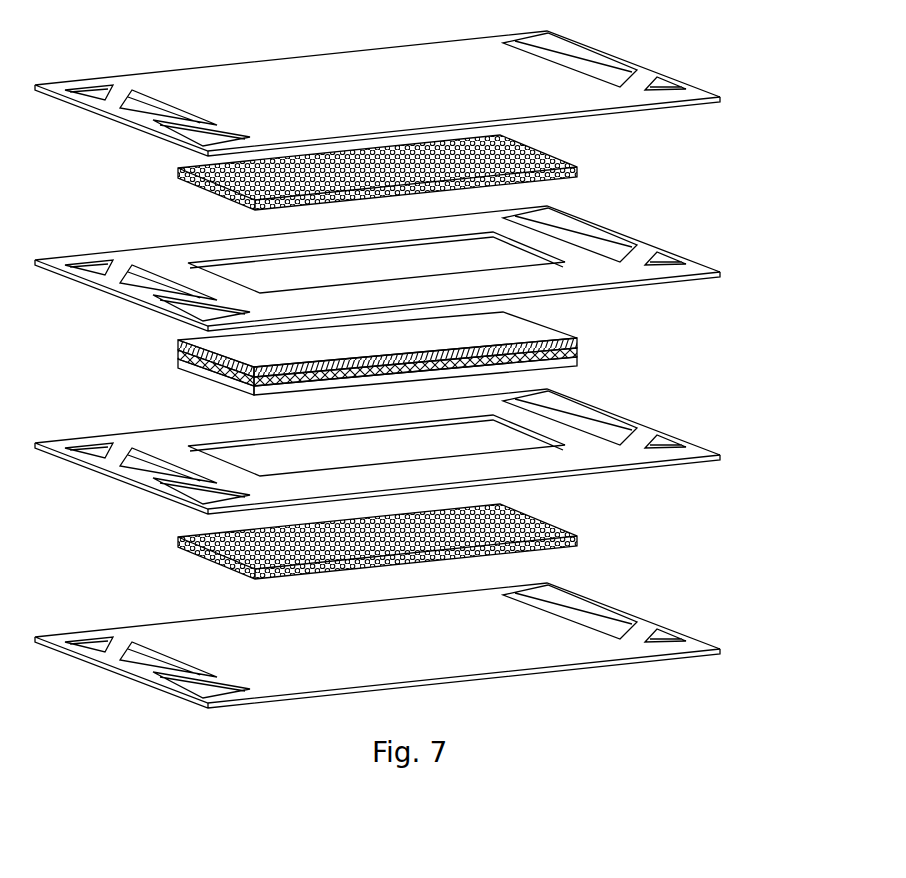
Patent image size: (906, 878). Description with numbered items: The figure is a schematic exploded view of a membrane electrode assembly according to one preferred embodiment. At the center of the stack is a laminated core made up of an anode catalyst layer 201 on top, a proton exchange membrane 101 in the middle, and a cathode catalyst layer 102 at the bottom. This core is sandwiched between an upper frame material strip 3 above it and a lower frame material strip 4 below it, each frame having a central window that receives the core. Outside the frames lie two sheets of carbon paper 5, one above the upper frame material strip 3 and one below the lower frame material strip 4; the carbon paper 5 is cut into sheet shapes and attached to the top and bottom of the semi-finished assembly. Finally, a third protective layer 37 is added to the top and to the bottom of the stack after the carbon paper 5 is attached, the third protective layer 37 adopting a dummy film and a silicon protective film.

The third protective layer 37 is at (638, 81).
The carbon paper 5 is at (580, 169).
The upper frame material strip 3 is at (648, 258).
The lower frame material strip 4 is at (625, 453).
The anode catalyst layer 201 is at (578, 340).
The proton exchange membrane 101 is at (578, 350).
The cathode catalyst layer 102 is at (578, 360).